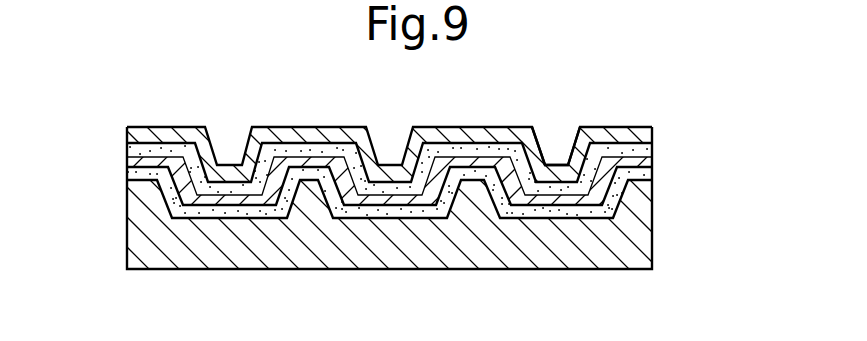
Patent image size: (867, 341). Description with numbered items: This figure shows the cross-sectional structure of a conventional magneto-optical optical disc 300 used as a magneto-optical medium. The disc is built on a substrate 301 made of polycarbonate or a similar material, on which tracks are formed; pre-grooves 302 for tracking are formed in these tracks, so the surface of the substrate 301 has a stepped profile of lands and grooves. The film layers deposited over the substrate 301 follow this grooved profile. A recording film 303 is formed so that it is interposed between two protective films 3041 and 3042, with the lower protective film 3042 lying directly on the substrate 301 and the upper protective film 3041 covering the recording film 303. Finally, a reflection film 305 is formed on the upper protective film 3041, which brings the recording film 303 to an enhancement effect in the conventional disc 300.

The magneto-optical optical disc 300 is at (424, 198).
The substrate 301 is at (638, 222).
The pre-grooves 302 is at (551, 136).
The recording film 303 is at (652, 163).
The protective film 3041 is at (127, 152).
The protective film 3042 is at (127, 178).
The reflection film 305 is at (652, 128).